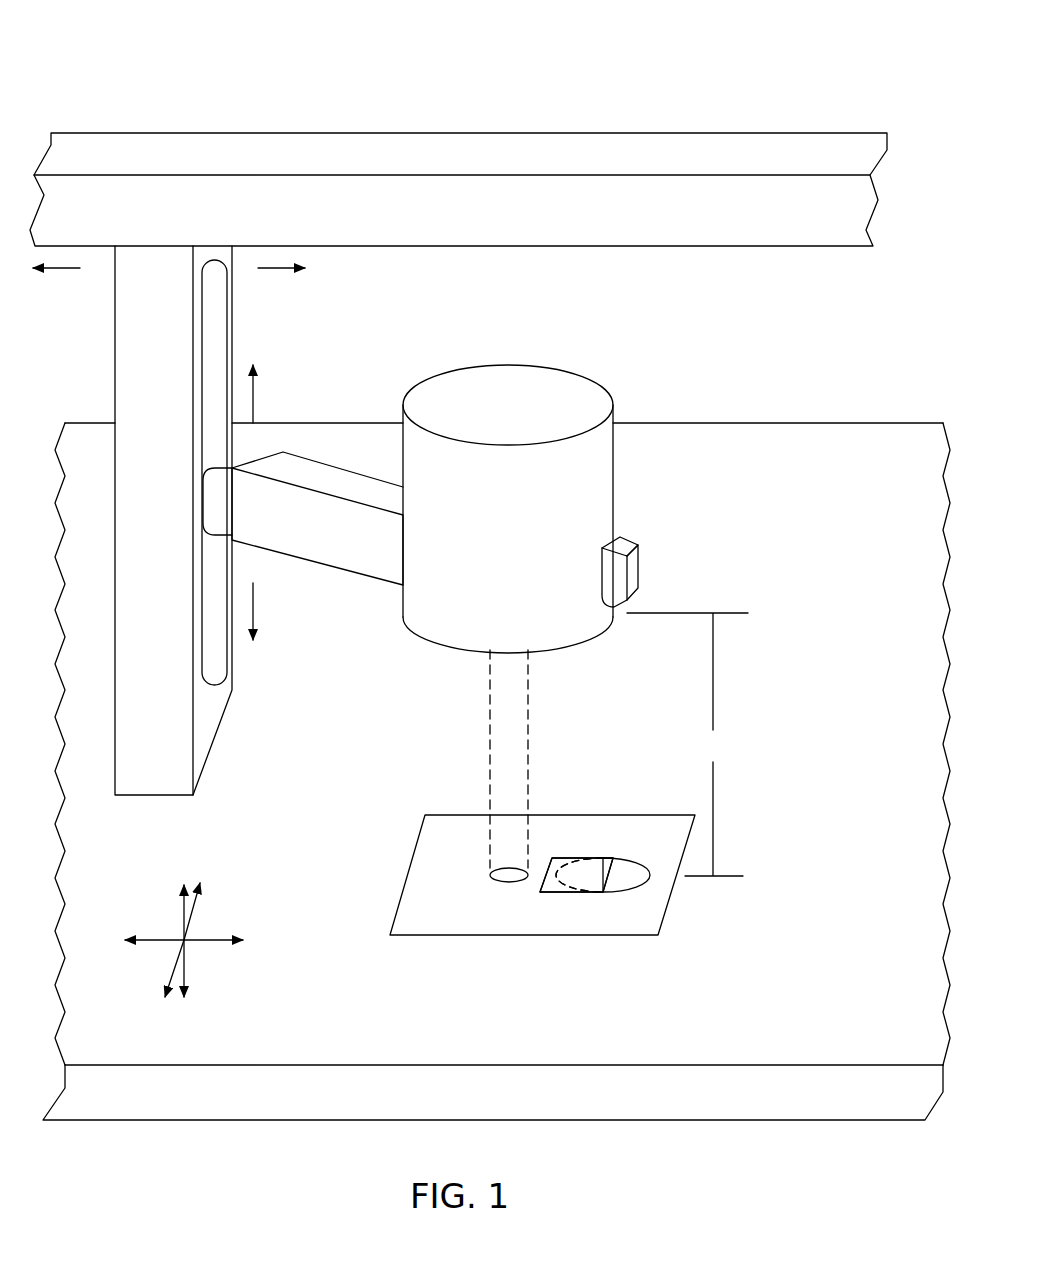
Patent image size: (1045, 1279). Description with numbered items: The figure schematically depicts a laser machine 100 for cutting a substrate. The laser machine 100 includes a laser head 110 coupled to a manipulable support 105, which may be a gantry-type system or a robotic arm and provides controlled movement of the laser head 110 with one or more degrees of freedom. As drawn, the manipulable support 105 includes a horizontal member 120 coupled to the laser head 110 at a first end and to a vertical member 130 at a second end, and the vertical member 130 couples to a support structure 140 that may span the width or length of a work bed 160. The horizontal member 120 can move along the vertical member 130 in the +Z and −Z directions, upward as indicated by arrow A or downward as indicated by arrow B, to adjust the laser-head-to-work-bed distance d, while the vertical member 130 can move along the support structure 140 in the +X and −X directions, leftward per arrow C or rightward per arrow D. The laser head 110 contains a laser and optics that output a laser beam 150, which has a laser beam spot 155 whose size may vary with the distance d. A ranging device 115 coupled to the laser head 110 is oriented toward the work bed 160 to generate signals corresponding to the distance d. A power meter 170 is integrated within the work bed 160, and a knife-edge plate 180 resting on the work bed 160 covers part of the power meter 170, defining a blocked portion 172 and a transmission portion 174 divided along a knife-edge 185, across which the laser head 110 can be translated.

The laser machine 100 is at (160, 105).
The manipulable support 105 is at (833, 308).
The laser head 110 is at (613, 486).
The ranging device 115 is at (640, 572).
The horizontal member 120 is at (312, 460).
The vertical member 130 is at (115, 378).
The support structure 140 is at (745, 247).
The laser beam 150 is at (540, 744).
The laser beam spot 155 is at (505, 875).
The work bed 160 is at (625, 1065).
The power meter 170 is at (622, 893).
The blocked portion 172 is at (592, 877).
The transmission portion 174 is at (636, 875).
The knife-edge plate 180 is at (553, 880).
The knife-edge 185 is at (600, 870).